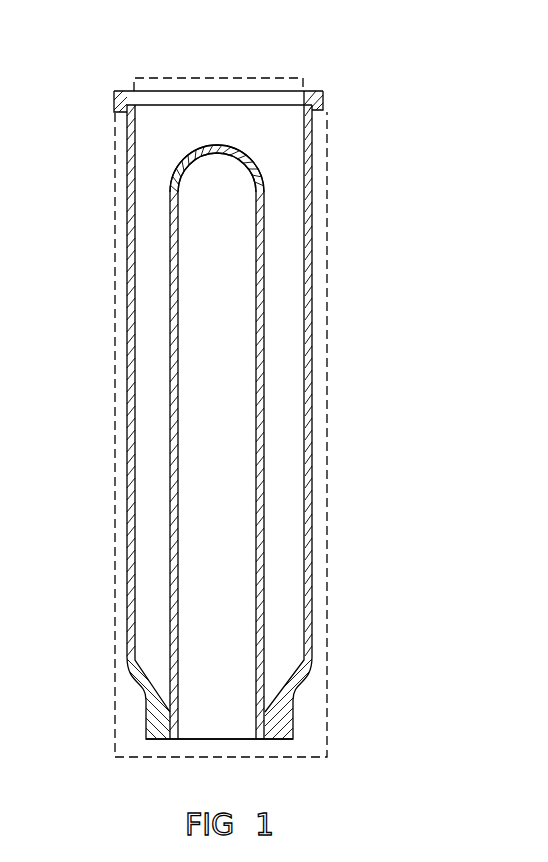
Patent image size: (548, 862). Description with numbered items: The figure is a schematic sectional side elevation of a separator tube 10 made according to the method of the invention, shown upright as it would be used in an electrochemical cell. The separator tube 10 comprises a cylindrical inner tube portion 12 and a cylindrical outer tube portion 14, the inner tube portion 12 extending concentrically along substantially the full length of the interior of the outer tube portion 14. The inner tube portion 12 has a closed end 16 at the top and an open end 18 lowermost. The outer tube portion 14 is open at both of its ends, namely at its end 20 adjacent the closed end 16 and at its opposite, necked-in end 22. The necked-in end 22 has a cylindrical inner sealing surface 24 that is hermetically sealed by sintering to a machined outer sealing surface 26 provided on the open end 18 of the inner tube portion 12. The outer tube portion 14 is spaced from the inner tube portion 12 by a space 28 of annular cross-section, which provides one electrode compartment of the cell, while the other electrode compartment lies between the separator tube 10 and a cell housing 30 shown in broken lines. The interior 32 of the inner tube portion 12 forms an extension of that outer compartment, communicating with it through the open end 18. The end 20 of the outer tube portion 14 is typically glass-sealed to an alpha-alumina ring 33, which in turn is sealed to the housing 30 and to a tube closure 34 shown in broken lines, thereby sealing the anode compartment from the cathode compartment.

The separator tube 10 is at (250, 398).
The inner tube portion 12 is at (258, 293).
The outer tube portion 14 is at (308, 322).
The closed end 16 is at (268, 163).
The open end 18 is at (228, 756).
The end 20 is at (194, 92).
The necked-in end 22 is at (130, 718).
The inner sealing surface 24 is at (185, 712).
The outer sealing surface 26 is at (270, 720).
The space 28 is at (287, 427).
The cell housing 30 is at (325, 378).
The interior 32 is at (205, 385).
The alpha-alumina ring 33 is at (316, 101).
The tube closure 34 is at (263, 77).